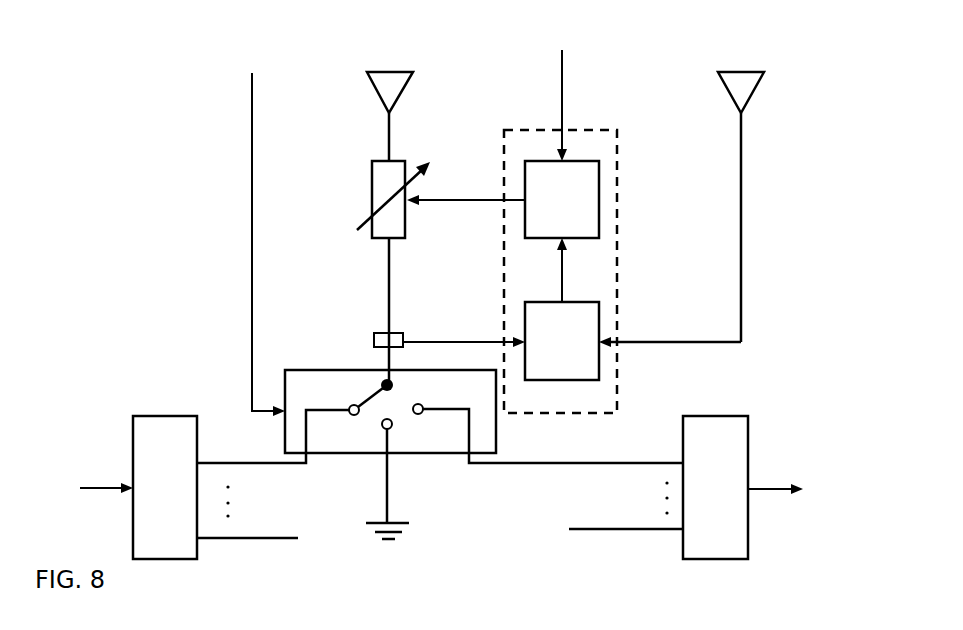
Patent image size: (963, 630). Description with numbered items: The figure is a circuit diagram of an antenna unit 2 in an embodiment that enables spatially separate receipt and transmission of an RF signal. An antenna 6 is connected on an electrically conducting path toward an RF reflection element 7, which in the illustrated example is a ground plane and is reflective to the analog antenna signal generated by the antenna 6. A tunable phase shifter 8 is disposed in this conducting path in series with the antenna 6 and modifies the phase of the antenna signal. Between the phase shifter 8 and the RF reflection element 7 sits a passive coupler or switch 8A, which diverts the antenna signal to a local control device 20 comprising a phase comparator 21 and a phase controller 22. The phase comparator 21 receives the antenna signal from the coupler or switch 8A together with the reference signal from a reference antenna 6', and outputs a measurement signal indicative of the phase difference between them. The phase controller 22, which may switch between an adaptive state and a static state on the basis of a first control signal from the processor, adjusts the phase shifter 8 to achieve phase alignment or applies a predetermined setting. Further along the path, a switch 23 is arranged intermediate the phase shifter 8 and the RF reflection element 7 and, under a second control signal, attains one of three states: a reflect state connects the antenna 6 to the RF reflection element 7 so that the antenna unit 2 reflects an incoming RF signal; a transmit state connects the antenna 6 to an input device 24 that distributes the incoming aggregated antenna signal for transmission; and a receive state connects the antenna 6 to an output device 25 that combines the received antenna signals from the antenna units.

The antenna unit 2 is at (638, 84).
The antenna 6 is at (403, 63).
The reference antenna 6' is at (757, 178).
The RF reflection element 7 is at (403, 523).
The tunable phase shifter 8 is at (407, 217).
The coupler or switch 8A is at (380, 333).
The local control device 20 is at (617, 238).
The phase comparator 21 is at (550, 340).
The phase controller 22 is at (550, 197).
The switch 23 is at (333, 368).
The input device 24 is at (153, 454).
The output device 25 is at (703, 454).